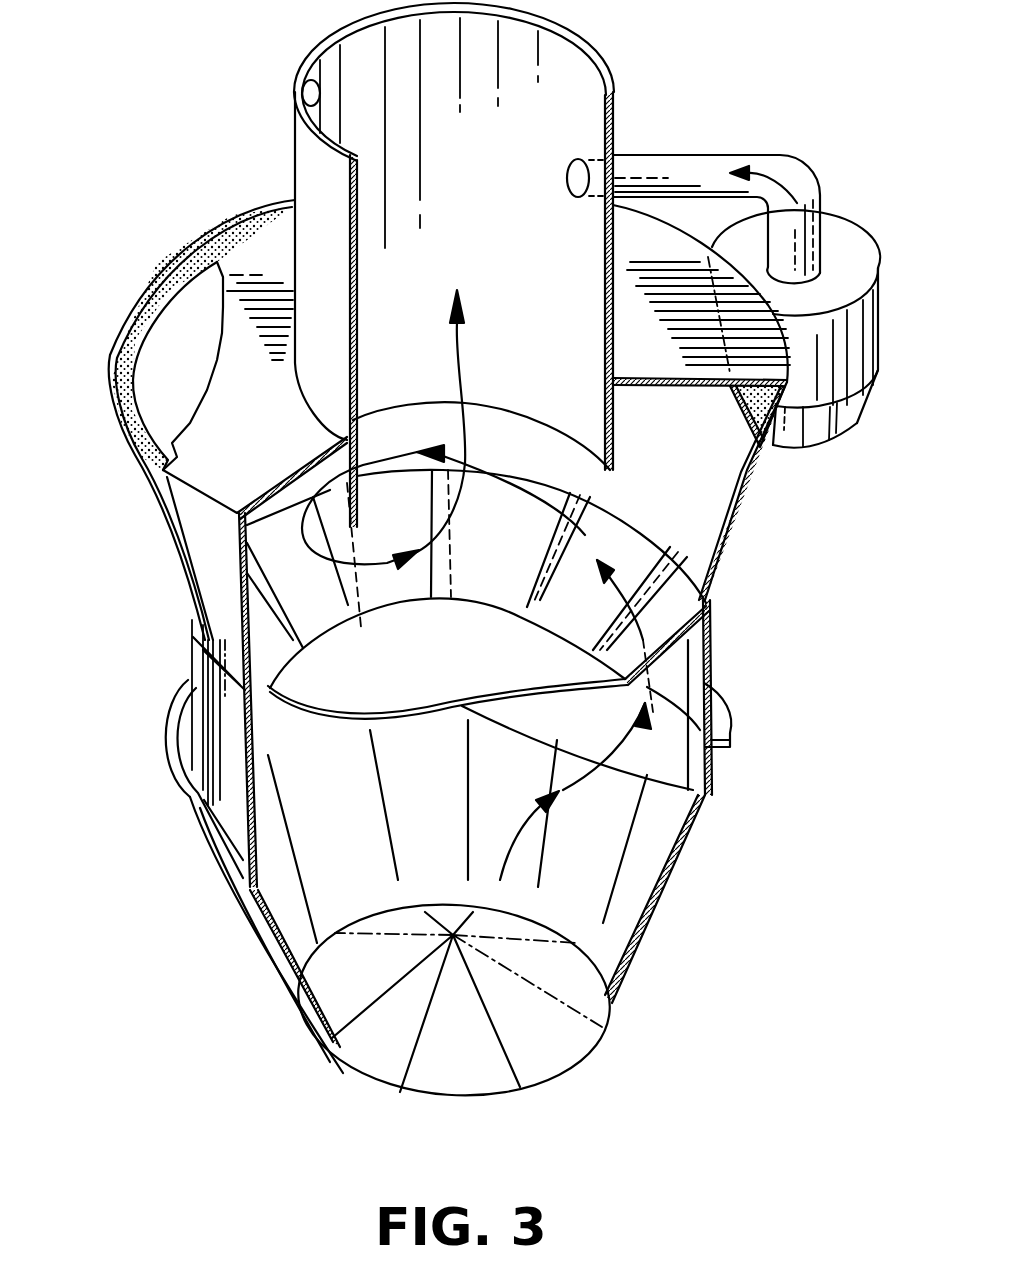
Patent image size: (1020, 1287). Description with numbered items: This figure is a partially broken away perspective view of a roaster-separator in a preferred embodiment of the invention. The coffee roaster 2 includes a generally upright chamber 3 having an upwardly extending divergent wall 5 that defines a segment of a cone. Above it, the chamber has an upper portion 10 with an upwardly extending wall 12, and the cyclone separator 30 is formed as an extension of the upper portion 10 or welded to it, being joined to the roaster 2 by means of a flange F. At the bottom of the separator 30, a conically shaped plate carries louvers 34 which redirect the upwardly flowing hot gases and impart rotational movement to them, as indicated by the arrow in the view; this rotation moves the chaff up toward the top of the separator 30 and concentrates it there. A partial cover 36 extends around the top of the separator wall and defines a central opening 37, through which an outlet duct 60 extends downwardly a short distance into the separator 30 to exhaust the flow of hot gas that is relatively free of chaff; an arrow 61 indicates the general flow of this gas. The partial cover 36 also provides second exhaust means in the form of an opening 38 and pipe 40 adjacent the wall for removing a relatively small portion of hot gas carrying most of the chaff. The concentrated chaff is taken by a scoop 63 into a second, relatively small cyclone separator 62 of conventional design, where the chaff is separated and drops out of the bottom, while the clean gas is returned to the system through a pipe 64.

The coffee roaster 2 is at (224, 953).
The upright chamber 3 is at (607, 937).
The divergent wall 5 is at (678, 876).
The upper portion 10 is at (120, 872).
The upwardly extending wall 12 is at (168, 549).
The cyclone separator 30 is at (98, 365).
The louvers 34 is at (297, 638).
The partial cover 36 is at (257, 460).
The central opening 37 is at (303, 400).
The opening 38 is at (737, 347).
The pipe 40 is at (700, 348).
The outlet duct 60 is at (303, 92).
The arrow 61 is at (473, 396).
The second cyclone separator 62 is at (862, 240).
The scoop 63 is at (743, 423).
The pipe 64 is at (803, 156).
The flange F is at (730, 733).